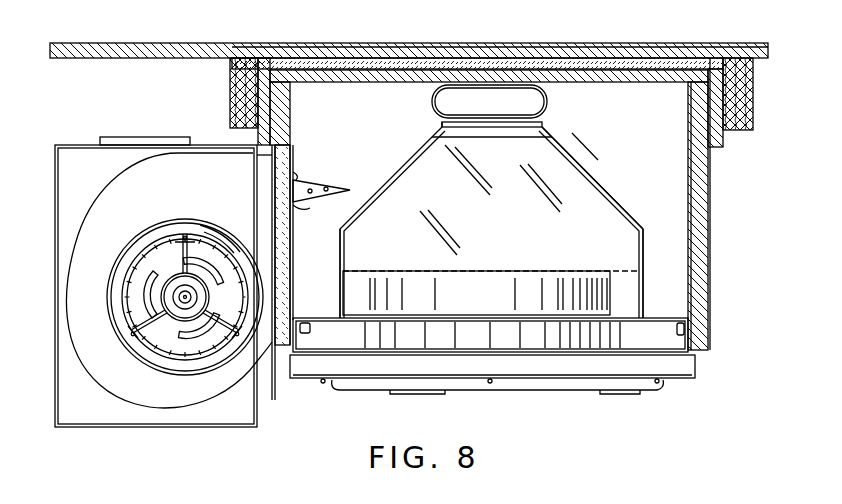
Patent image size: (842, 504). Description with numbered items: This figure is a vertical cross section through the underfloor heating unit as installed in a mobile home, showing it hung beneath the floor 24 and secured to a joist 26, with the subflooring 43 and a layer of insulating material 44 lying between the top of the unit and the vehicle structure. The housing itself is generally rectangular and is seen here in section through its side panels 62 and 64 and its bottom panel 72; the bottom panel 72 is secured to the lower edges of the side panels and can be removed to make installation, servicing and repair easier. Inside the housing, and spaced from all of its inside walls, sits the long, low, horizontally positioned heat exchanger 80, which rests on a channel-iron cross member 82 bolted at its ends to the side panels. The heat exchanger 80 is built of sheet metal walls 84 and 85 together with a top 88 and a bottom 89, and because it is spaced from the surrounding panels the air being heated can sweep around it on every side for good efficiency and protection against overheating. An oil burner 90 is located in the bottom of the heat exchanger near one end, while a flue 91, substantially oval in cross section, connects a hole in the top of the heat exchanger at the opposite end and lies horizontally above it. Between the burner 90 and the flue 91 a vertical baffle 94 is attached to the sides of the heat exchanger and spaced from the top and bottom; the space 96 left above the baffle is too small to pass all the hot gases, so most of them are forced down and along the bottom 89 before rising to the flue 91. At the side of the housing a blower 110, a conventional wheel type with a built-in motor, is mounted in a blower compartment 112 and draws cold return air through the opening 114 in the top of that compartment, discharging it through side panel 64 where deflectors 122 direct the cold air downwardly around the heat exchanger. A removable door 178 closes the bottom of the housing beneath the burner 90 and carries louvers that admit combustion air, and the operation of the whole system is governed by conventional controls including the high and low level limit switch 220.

The floor 24 is at (575, 45).
The joist 26 is at (230, 95).
The subflooring 43 is at (375, 50).
The insulating material 44 is at (522, 62).
The side panel 62 is at (712, 210).
The side panel 64 is at (298, 122).
The bottom panel 72 is at (680, 380).
The heat exchanger 80 is at (398, 174).
The cross member 82 is at (650, 318).
The sheet metal wall 84 is at (644, 252).
The sheet metal wall 85 is at (340, 256).
The top 88 is at (440, 127).
The bottom 89 is at (462, 320).
The oil burner 90 is at (526, 287).
The flue 91 is at (548, 108).
The vertical baffle 94 is at (598, 192).
The space 96 is at (545, 131).
The blower 110 is at (92, 240).
The blower compartment 112 is at (55, 372).
The opening 114 is at (140, 138).
The deflectors 122 is at (297, 176).
The removable door 178 is at (610, 392).
The high and low level limit switch 220 is at (326, 187).